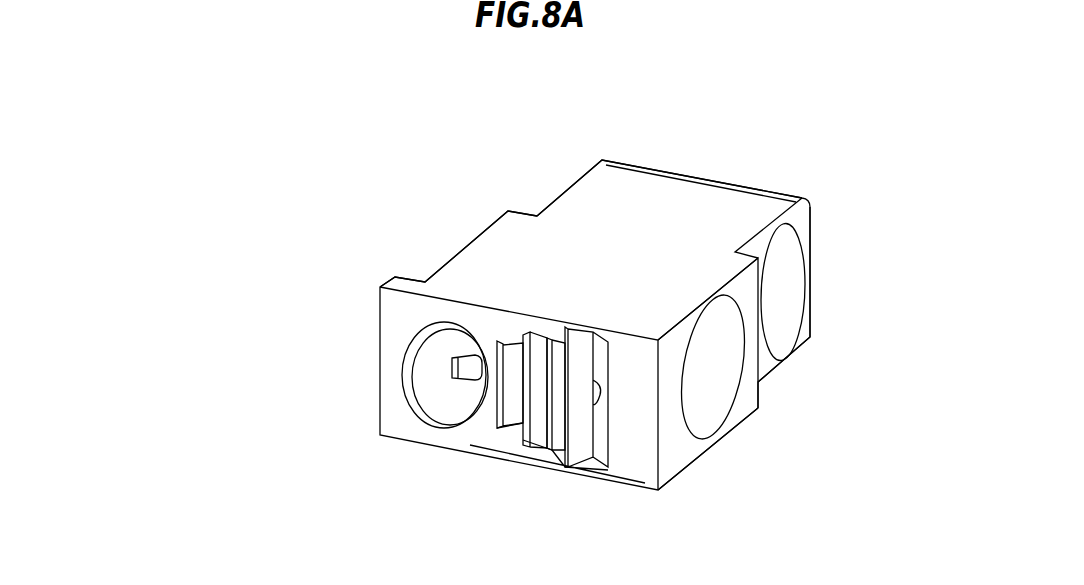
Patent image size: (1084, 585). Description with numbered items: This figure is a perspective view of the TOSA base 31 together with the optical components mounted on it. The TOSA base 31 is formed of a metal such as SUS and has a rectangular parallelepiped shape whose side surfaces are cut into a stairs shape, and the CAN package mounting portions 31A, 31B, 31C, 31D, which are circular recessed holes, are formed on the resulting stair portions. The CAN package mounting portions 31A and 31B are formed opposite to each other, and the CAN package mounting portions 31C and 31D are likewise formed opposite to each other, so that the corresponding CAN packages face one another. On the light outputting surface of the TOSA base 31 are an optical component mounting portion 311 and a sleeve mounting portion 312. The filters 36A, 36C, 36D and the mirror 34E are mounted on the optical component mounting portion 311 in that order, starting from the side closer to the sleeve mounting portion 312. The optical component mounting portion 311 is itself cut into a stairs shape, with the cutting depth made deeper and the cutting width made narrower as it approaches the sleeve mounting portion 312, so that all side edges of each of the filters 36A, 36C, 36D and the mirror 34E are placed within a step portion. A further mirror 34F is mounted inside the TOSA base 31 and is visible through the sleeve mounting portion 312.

The TOSA base 31 is at (719, 103).
The CAN package mounting portion 31A is at (467, 246).
The CAN package mounting portion 31B is at (717, 412).
The CAN package mounting portion 31C is at (570, 185).
The CAN package mounting portion 31D is at (800, 283).
The optical component mounting portion 311 is at (537, 405).
The sleeve mounting portion 312 is at (432, 382).
The mirror 34E is at (585, 447).
The mirror 34F is at (468, 368).
The filter 36A is at (510, 387).
The filter 36C is at (510, 383).
The filter 36D is at (558, 425).